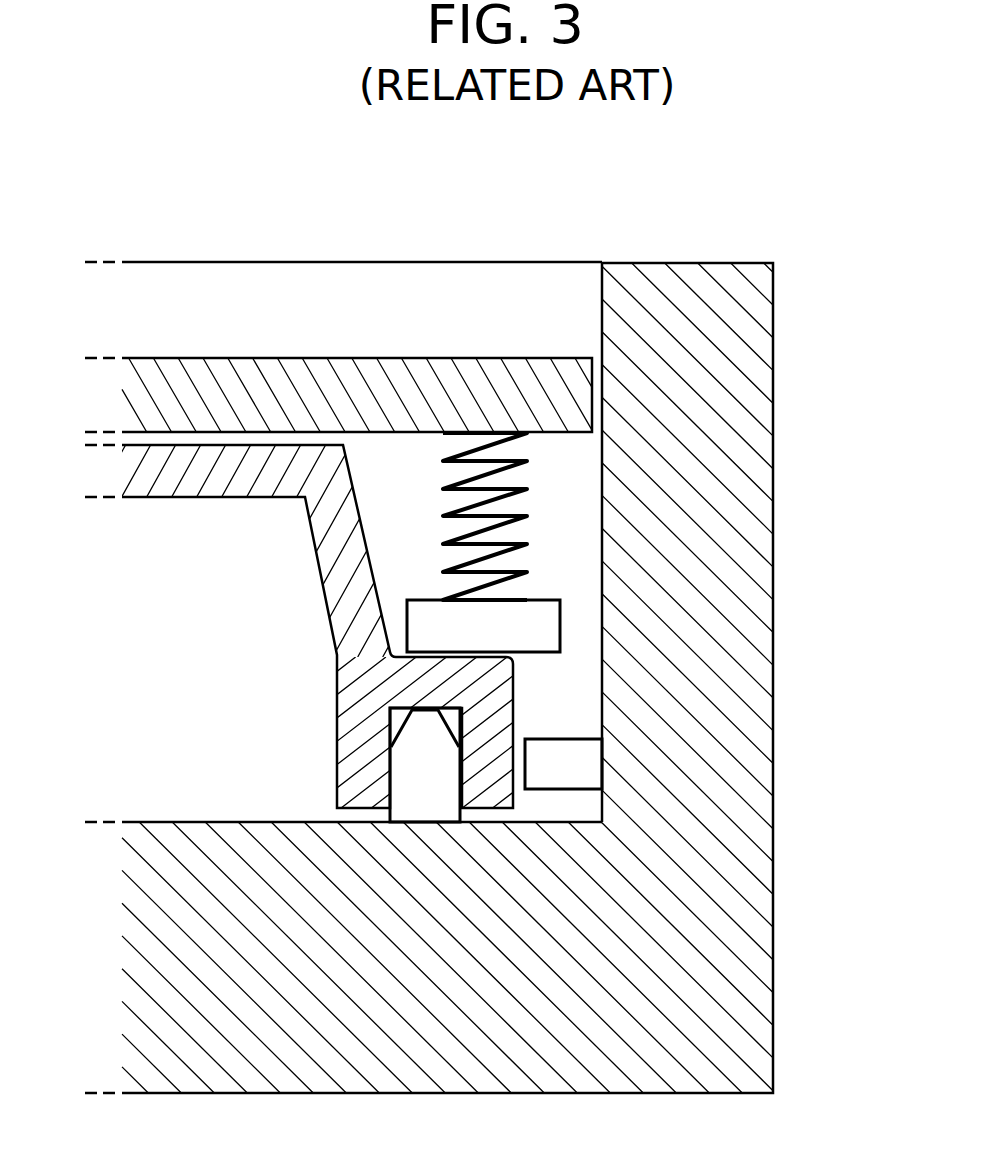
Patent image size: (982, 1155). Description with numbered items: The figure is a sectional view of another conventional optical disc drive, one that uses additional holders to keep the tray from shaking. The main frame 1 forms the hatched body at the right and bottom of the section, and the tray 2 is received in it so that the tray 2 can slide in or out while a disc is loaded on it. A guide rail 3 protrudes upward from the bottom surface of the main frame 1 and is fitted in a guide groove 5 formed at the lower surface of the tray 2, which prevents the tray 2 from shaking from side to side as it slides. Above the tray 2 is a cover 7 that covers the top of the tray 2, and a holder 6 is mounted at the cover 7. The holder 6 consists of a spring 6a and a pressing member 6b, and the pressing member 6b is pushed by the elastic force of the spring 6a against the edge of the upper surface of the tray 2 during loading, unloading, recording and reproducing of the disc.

The main frame 1 is at (735, 712).
The tray 2 is at (168, 478).
The guide rail 3 is at (422, 803).
The guide groove 5 is at (386, 722).
The holder 6 is at (545, 542).
The spring 6a is at (520, 536).
The pressing member 6b is at (543, 630).
The cover 7 is at (224, 397).